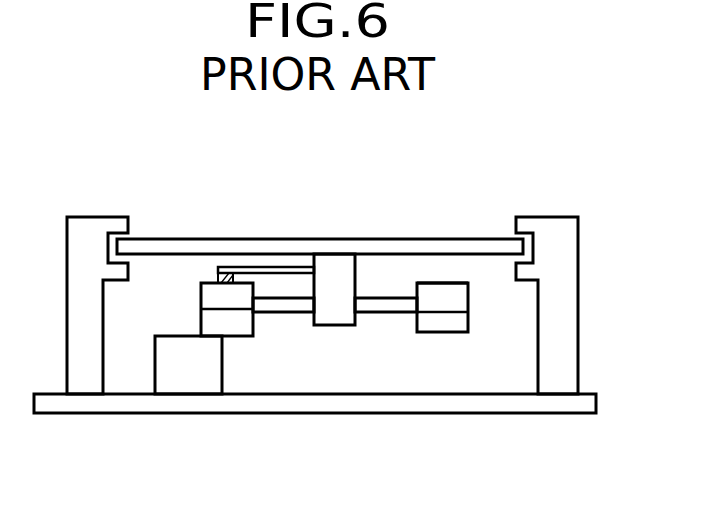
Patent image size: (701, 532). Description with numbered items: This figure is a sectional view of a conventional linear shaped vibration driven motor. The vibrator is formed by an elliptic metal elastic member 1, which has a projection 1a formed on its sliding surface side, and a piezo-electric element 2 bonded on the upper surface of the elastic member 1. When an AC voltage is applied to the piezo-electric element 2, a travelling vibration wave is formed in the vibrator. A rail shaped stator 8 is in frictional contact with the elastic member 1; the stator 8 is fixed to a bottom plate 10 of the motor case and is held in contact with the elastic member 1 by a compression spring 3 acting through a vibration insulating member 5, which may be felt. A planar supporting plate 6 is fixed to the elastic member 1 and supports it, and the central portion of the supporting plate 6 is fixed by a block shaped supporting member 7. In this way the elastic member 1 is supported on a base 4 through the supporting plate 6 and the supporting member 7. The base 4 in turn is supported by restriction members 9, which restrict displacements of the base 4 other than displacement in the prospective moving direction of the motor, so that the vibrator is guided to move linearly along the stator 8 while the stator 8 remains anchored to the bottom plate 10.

The elastic member 1 is at (468, 298).
The projection 1a is at (455, 333).
The piezo-electric element 2 is at (436, 283).
The compression spring 3 is at (277, 267).
The base 4 is at (334, 246).
The vibration insulating member 5 is at (217, 279).
The supporting plate 6 is at (385, 314).
The supporting member 7 is at (342, 326).
The stator 8 is at (190, 378).
The restriction members 9 is at (576, 257).
The bottom plate 10 is at (550, 408).